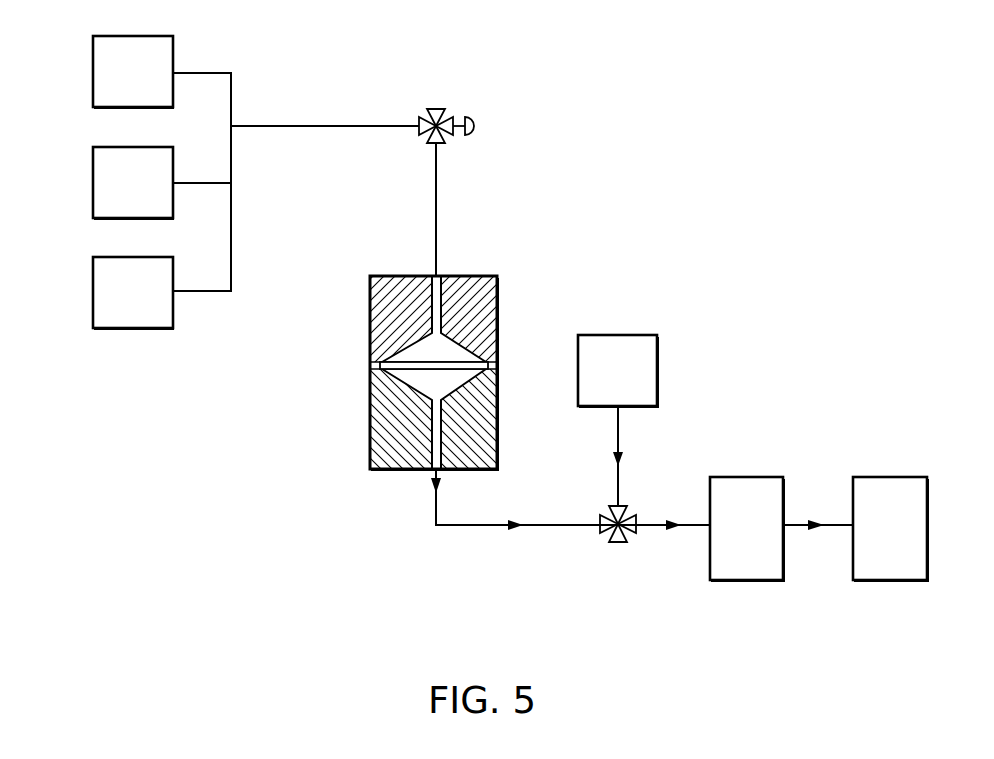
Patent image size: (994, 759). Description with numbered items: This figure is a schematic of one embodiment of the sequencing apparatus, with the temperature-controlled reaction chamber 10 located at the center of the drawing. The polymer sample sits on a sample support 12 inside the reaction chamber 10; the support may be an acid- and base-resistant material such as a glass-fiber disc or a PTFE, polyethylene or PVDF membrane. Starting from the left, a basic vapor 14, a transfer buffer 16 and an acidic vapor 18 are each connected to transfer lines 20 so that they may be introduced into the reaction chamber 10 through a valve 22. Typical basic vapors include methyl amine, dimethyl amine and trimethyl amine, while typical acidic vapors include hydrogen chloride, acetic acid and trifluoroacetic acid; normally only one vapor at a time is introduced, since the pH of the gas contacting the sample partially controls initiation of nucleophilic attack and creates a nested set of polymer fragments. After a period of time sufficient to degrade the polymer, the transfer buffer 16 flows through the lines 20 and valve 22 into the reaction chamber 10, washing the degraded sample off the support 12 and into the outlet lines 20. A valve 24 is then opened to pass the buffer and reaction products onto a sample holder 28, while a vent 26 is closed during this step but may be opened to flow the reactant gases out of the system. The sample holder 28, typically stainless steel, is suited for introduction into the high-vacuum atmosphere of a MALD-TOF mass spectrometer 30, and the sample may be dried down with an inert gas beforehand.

The reaction chamber 10 is at (378, 249).
The sample support 12 is at (396, 366).
The basic vapor 14 is at (93, 48).
The transfer buffer 16 is at (93, 177).
The acidic vapor 18 is at (93, 283).
The transfer lines 20 is at (232, 88).
The valve 22 is at (441, 108).
The valve 24 is at (620, 545).
The vent 26 is at (643, 334).
The sample holder 28 is at (752, 477).
The MALD-TOF mass spectrometer 30 is at (873, 477).